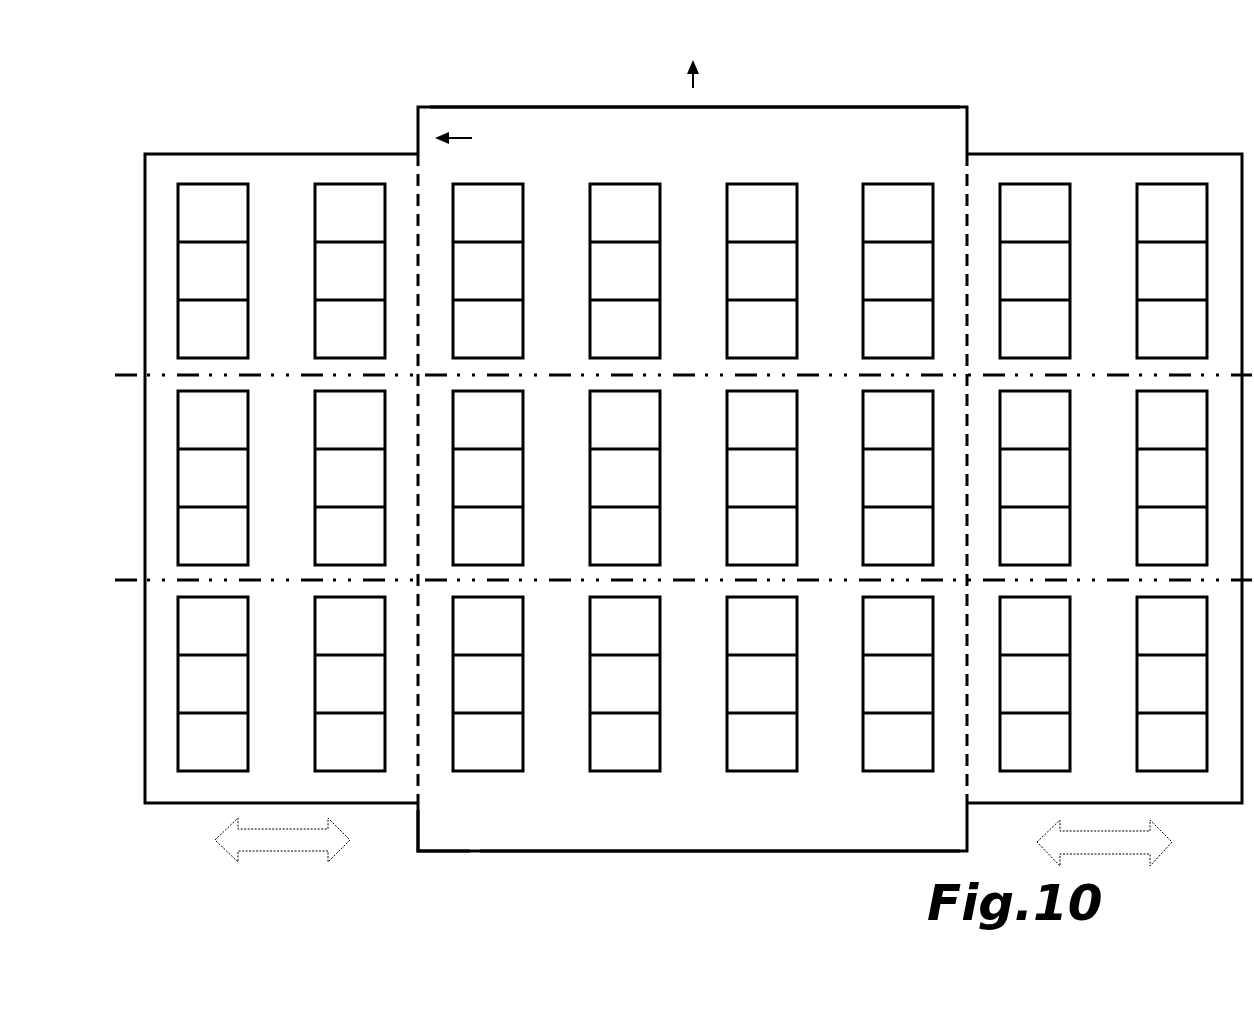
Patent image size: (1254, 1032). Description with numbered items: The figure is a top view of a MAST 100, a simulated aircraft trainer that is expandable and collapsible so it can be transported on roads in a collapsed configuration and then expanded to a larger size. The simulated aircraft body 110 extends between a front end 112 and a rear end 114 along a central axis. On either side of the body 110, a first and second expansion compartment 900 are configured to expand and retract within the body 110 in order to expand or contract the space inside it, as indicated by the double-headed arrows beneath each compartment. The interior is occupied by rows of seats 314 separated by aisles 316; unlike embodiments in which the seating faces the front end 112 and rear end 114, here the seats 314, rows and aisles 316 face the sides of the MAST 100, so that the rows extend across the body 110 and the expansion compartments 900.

The MAST 100 is at (995, 86).
The simulated aircraft body 110 is at (455, 852).
The front end 112 is at (463, 106).
The rear end 114 is at (787, 853).
The seat 314 is at (523, 738).
The aisle 316 is at (158, 368).
The expansion compartment 900 is at (198, 130).